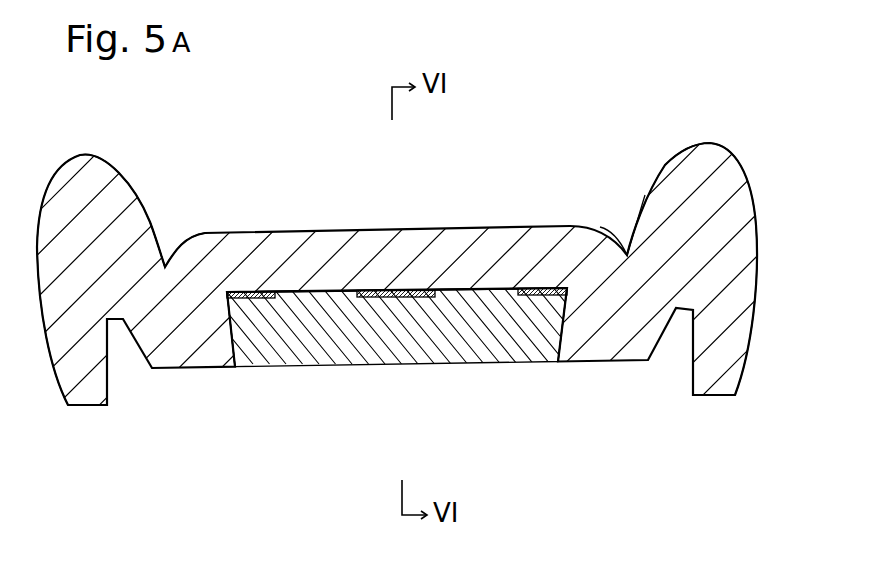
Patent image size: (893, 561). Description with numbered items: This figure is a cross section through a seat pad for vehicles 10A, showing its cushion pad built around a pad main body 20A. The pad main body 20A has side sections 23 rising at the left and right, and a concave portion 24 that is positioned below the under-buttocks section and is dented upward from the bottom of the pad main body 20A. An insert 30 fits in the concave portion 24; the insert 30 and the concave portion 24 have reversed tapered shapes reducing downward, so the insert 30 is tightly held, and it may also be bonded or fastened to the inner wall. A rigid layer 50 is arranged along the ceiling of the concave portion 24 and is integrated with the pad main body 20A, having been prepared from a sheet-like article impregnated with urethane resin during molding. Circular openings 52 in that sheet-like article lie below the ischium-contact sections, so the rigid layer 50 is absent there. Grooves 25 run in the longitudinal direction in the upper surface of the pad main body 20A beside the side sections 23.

The seat pad for vehicles 10A is at (603, 95).
The pad main body 20A is at (512, 227).
The side sections 23 is at (128, 192).
The grooves 25 is at (165, 243).
The concave portion 24 is at (548, 342).
The insert 30 is at (286, 358).
The rigid layer 50 is at (382, 288).
The circular openings 52 is at (306, 292).